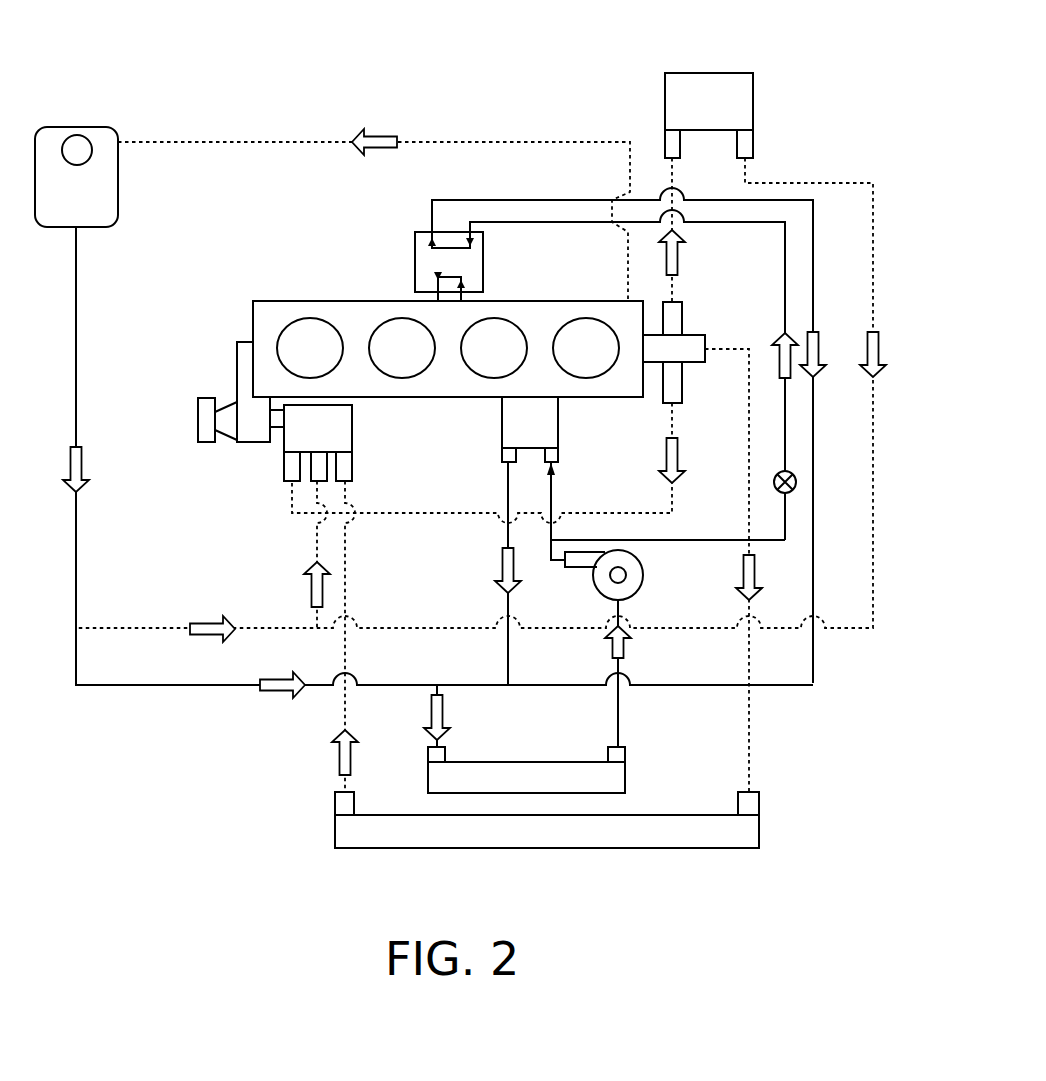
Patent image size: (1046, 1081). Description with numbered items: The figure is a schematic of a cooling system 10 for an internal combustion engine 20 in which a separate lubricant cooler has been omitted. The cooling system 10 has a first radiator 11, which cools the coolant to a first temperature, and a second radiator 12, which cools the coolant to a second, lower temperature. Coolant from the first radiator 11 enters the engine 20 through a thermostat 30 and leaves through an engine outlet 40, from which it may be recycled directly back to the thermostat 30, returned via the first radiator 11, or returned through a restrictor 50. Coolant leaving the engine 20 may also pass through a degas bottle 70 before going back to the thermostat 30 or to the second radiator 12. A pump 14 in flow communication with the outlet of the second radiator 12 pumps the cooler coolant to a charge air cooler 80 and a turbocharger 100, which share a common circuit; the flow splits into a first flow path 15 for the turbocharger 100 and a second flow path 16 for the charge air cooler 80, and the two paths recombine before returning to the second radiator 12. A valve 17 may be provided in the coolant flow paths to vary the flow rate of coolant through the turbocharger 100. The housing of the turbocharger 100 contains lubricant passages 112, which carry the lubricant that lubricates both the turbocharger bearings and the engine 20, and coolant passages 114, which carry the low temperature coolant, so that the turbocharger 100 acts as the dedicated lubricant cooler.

The cooling system 10 is at (226, 846).
The first radiator 11 is at (647, 840).
The second radiator 12 is at (620, 775).
The pump 14 is at (632, 583).
The first flow path 15 is at (693, 539).
The second flow path 16 is at (553, 493).
The valve 17 is at (780, 472).
The internal combustion engine 20 is at (287, 308).
The thermostat 30 is at (290, 443).
The engine outlet 40 is at (700, 335).
The restrictor 50 is at (728, 73).
The degas bottle 70 is at (98, 142).
The charge air cooler 80 is at (550, 440).
The turbocharger 100 is at (417, 278).
The lubricant passages 112 is at (455, 268).
The coolant passages 114 is at (450, 250).